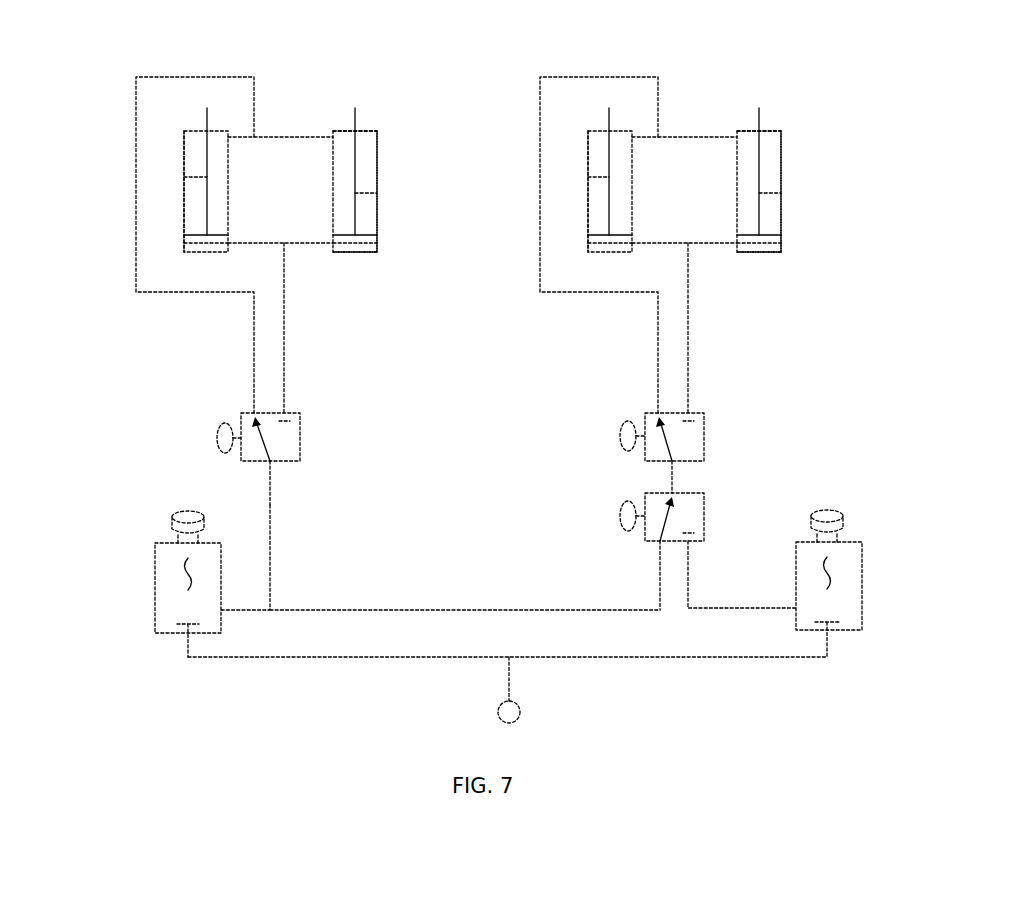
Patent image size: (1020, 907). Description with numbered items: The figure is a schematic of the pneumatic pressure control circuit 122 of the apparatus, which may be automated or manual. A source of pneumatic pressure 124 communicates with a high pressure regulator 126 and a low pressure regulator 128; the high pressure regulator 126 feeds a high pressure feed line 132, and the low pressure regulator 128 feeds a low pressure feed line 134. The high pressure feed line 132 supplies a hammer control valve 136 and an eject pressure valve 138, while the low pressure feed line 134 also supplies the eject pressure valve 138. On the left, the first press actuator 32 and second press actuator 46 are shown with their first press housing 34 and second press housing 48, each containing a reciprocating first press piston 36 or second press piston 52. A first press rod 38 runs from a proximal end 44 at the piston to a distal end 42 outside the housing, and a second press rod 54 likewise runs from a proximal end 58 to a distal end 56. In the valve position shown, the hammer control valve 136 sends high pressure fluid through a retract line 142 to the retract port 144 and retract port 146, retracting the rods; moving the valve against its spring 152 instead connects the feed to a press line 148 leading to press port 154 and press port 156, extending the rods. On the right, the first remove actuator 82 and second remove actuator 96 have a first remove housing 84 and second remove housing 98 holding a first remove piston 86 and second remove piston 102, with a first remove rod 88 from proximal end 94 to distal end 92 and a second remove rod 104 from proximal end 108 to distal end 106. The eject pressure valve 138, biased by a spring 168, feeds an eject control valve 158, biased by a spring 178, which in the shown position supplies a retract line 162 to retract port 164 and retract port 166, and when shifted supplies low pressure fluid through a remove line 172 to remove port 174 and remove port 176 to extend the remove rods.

The pneumatic pressure control circuit 122 is at (772, 50).
The first press actuator 32 is at (181, 147).
The first press housing 34 is at (184, 200).
The first press piston 36 is at (197, 243).
The first press rod 38 is at (184, 177).
The distal end of the first press rod 42 is at (207, 120).
The proximal end of the first press rod 44 is at (207, 235).
The second press actuator 46 is at (378, 140).
The second press housing 48 is at (377, 168).
The second press piston 52 is at (365, 243).
The second press rod 54 is at (355, 193).
The distal end of the second press rod 56 is at (355, 115).
The proximal end of the second press rod 58 is at (355, 235).
The first remove actuator 82 is at (585, 147).
The first remove housing 84 is at (588, 200).
The first remove piston 86 is at (600, 243).
The first remove rod 88 is at (588, 177).
The distal end of the first remove rod 92 is at (609, 120).
The proximal end of the first remove rod 94 is at (609, 235).
The second remove actuator 96 is at (782, 140).
The second remove housing 98 is at (781, 168).
The second remove piston 102 is at (769, 243).
The second remove rod 104 is at (759, 193).
The distal end of the second remove rod 106 is at (759, 115).
The proximal end of the second remove rod 108 is at (759, 235).
The source of pneumatic pressure 124 is at (520, 712).
The high pressure regulator 126 is at (160, 635).
The low pressure regulator 128 is at (845, 632).
The high pressure feed line 132 is at (271, 555).
The low pressure feed line 134 is at (712, 608).
The hammer control valve 136 is at (285, 461).
The eject pressure valve 138 is at (704, 520).
The retract line 142 is at (200, 292).
The retract port 144 is at (228, 140).
The retract port 146 is at (333, 131).
The press line 148 is at (284, 332).
The spring 152 is at (300, 422).
The press port 154 is at (228, 243).
The press port 156 is at (333, 252).
The eject control valve 158 is at (704, 440).
The retract line 162 is at (658, 365).
The retract port 164 is at (632, 140).
The retract port 166 is at (737, 131).
The spring 168 is at (704, 502).
The remove line 172 is at (690, 353).
The remove port 174 is at (632, 243).
The remove port 176 is at (737, 252).
The spring 178 is at (704, 422).